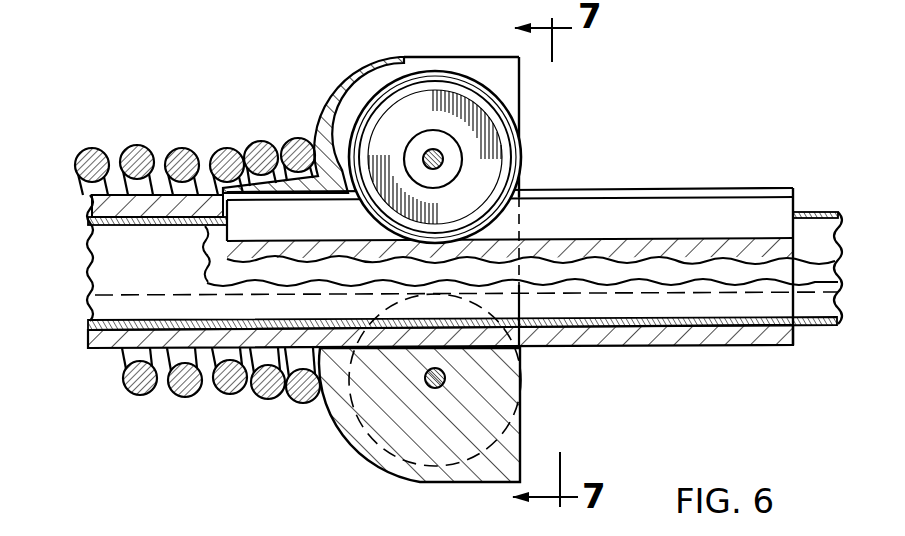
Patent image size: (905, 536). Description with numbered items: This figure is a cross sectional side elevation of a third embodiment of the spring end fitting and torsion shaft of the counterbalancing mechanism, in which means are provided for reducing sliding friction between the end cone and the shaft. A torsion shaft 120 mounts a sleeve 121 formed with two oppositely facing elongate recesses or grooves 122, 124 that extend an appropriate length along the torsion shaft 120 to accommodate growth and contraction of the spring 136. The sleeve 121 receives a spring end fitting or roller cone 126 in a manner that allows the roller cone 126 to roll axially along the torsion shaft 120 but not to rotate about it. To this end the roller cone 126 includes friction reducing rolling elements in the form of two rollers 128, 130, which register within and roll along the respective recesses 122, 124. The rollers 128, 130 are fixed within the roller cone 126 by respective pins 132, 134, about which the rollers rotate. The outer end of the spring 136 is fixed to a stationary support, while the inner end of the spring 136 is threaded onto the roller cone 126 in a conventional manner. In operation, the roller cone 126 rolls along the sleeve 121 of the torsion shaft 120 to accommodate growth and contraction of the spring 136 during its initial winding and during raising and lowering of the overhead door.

The torsion shaft 120 is at (130, 233).
The sleeve 121 is at (789, 348).
The recess or groove 122 is at (562, 243).
The recess or groove 124 is at (572, 293).
The spring end fitting or roller cone 126 is at (320, 432).
The roller 128 is at (510, 107).
The roller 130 is at (522, 438).
The pin 132 is at (428, 152).
The pin 134 is at (445, 378).
The spring 136 is at (143, 160).